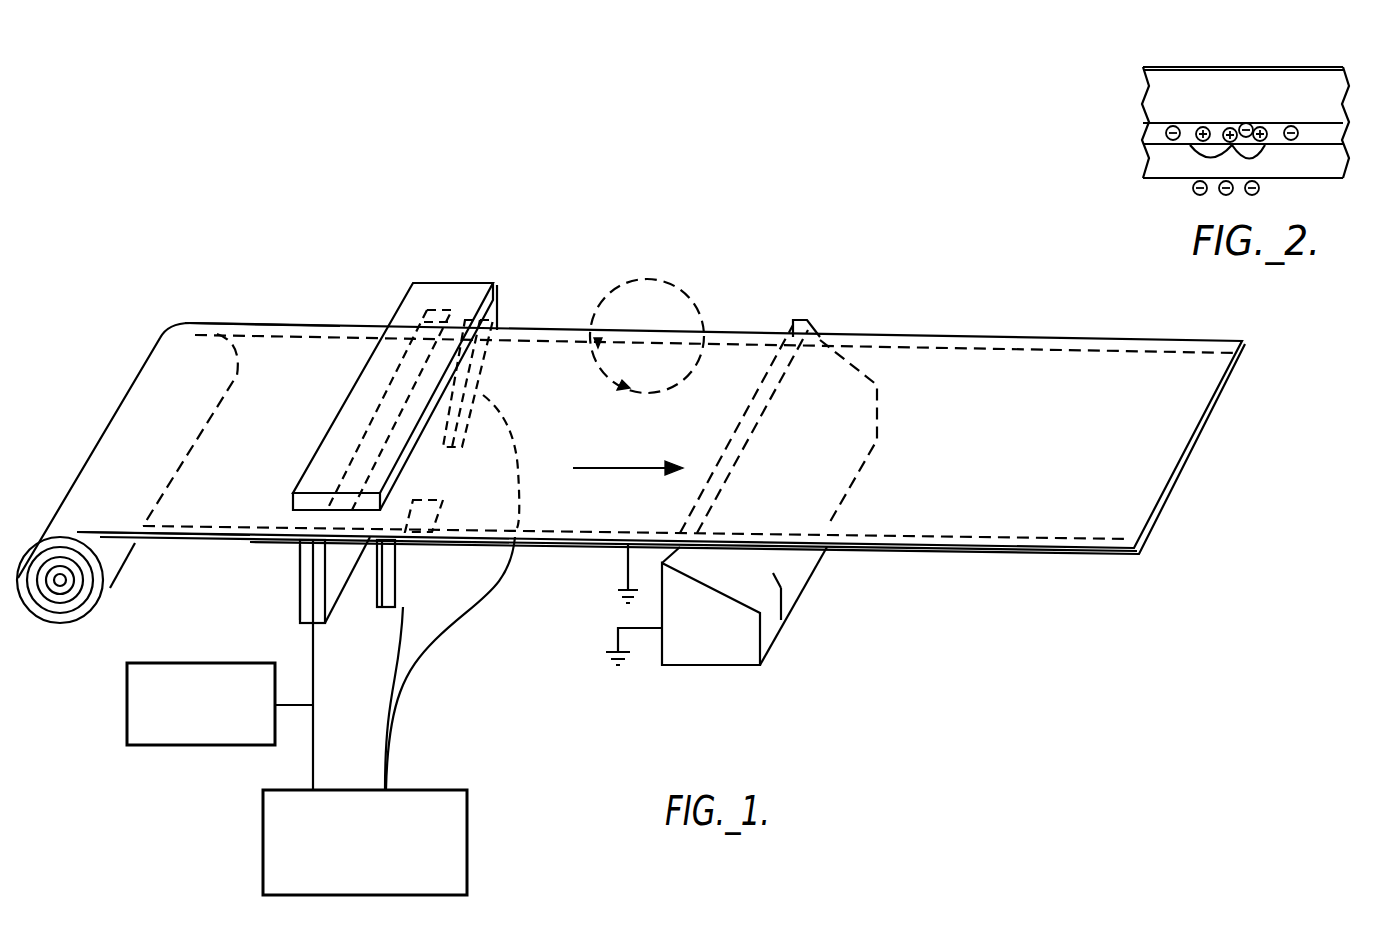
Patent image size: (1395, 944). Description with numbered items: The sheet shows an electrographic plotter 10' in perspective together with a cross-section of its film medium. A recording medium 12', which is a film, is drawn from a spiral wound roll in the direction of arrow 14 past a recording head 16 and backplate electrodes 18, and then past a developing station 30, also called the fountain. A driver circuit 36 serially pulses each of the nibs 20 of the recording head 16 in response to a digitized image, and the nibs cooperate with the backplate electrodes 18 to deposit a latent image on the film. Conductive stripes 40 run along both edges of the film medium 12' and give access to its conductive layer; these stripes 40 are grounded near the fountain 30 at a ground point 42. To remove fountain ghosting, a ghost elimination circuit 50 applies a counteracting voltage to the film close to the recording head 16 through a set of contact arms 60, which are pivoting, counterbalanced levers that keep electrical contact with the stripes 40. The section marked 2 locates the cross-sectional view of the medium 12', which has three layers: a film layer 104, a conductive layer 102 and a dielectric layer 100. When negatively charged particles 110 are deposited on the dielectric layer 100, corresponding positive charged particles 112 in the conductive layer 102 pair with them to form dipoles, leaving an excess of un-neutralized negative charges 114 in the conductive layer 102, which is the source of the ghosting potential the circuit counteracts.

In FIG. 1, the electrographic plotter 10' is at (676, 183).
In FIG. 1, the recording medium 12' is at (631, 450).
In FIG. 2, the recording medium 12' is at (1245, 105).
In FIG. 1, the arrow 14 is at (630, 463).
In FIG. 1, the recording head 16 is at (357, 576).
In FIG. 1, the backplate electrodes 18 is at (346, 472).
In FIG. 1, the nibs 20 is at (300, 598).
In FIG. 1, the developing station 30 is at (718, 632).
In FIG. 1, the driver circuit 36 is at (245, 663).
In FIG. 1, the conductive stripes 40 is at (338, 325).
In FIG. 1, the ground point 42 is at (628, 566).
In FIG. 1, the ghost elimination circuit 50 is at (435, 790).
In FIG. 1, the contact arms 60 is at (498, 302).
In FIG. 1, the section line 2- 2 is at (642, 338).
In FIG. 2, the dielectric layer 100 is at (1345, 160).
In FIG. 2, the conductive layer 102 is at (1345, 137).
In FIG. 2, the film layer 104 is at (1345, 92).
In FIG. 2, the negatively charged particles 110 is at (1272, 186).
In FIG. 2, the positive charged particles 112 is at (1190, 146).
In FIG. 2, the excess negative charges 114 is at (1288, 128).